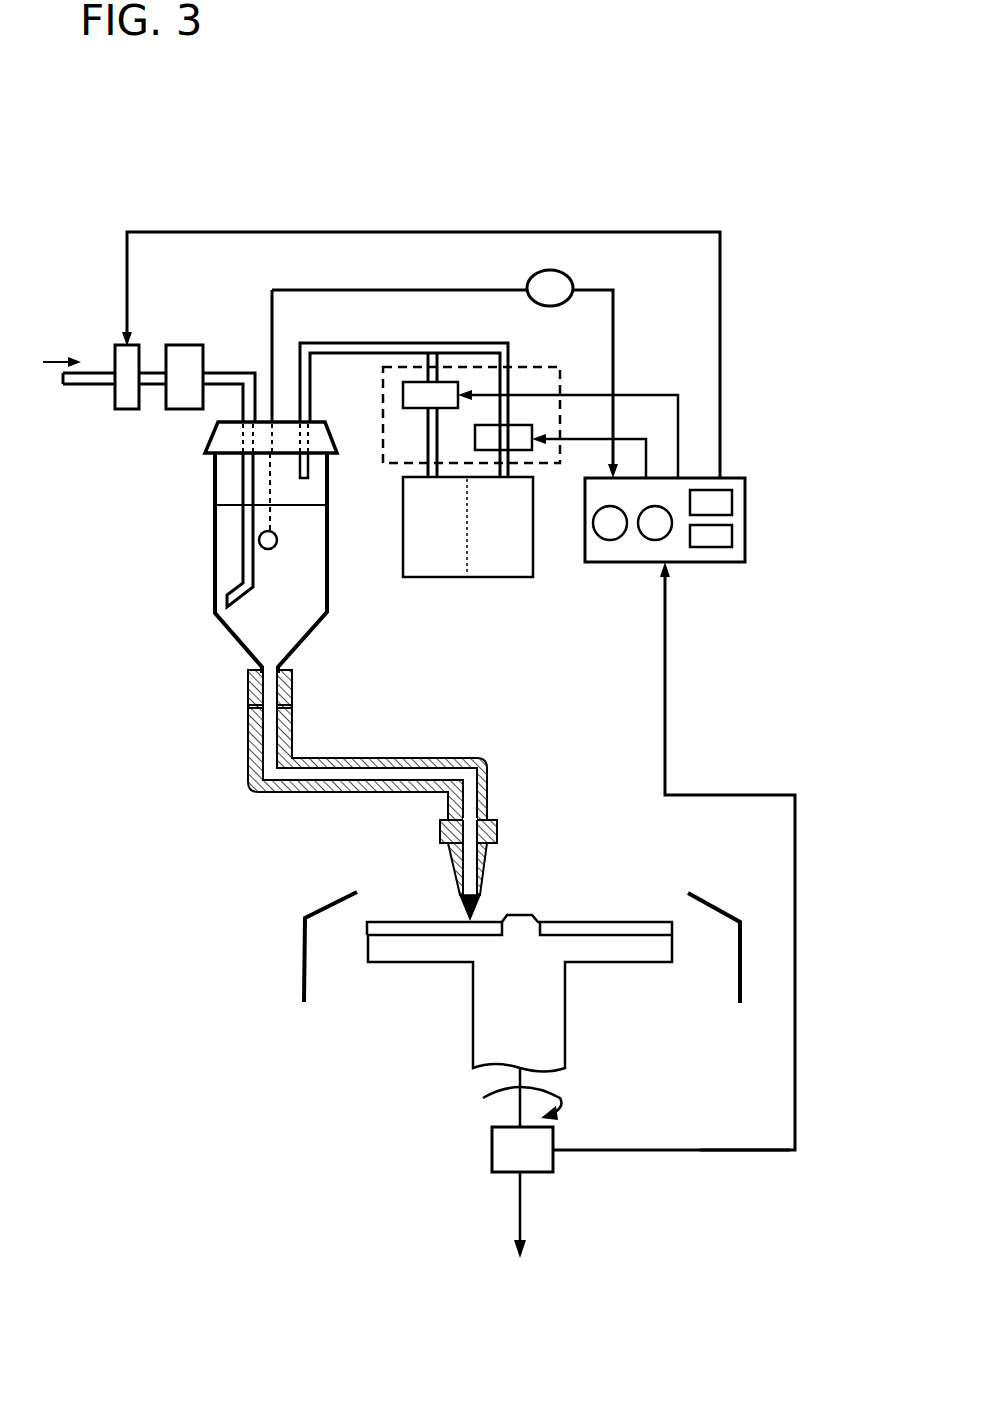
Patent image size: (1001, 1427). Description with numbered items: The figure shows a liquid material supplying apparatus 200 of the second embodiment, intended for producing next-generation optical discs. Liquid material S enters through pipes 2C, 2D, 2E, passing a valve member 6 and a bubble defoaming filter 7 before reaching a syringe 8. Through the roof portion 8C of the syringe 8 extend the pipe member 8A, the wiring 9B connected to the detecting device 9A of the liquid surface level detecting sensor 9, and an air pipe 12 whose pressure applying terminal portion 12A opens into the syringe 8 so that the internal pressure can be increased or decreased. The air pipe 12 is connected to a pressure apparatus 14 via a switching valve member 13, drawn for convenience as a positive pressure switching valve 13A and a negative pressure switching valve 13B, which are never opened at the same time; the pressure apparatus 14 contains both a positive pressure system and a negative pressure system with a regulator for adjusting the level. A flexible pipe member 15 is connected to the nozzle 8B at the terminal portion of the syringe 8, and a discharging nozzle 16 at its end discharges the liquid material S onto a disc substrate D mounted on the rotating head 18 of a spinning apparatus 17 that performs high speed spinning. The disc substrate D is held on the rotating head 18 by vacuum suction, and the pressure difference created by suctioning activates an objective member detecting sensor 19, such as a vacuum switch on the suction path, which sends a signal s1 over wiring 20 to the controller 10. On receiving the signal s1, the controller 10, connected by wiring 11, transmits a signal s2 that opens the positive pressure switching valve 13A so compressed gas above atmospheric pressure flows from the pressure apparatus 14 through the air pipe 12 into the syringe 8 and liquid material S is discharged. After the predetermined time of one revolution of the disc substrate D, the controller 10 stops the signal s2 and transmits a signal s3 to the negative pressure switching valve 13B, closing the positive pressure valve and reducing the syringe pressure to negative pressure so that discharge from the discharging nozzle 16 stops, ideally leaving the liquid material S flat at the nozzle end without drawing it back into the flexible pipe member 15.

The liquid material supplying apparatus 200 is at (708, 147).
The pipe 2C is at (92, 373).
The pipe 2D is at (148, 384).
The pipe 2E is at (222, 373).
The valve member 6 is at (130, 398).
The bubble defoaming filter 7 is at (182, 357).
The syringe 8 is at (327, 594).
The pipe member of syringe 8A is at (248, 560).
The nozzle of syringe 8B is at (300, 678).
The roof portion of syringe 8C is at (220, 437).
The liquid surface level detecting sensor 9 is at (550, 288).
The detecting device of liquid surface level detecting sensor 9A is at (278, 540).
The wiring of liquid surface level detecting sensor 9B is at (273, 326).
The controller 10 is at (745, 517).
The wiring 11 is at (533, 232).
The air pipe 12 is at (370, 352).
The pressure applying terminal portion of air pipe 12A is at (305, 463).
The switching valve member 13 is at (383, 385).
The positive pressure switching valve member 13A is at (416, 392).
The negative pressure switching valve member 13B is at (512, 443).
The pressure apparatus 14 is at (485, 577).
The flexible pipe member 15 is at (372, 755).
The discharging nozzle 16 is at (490, 860).
The spinning apparatus 17 is at (312, 886).
The rotating head 18 is at (550, 1005).
The objective member detecting sensor 19 is at (503, 1155).
The wiring 20 is at (795, 938).
The disc substrate D is at (585, 921).
The liquid material S is at (153, 491).
The signal s1 is at (741, 1134).
The signal s2 is at (568, 422).
The signal s3 is at (590, 445).